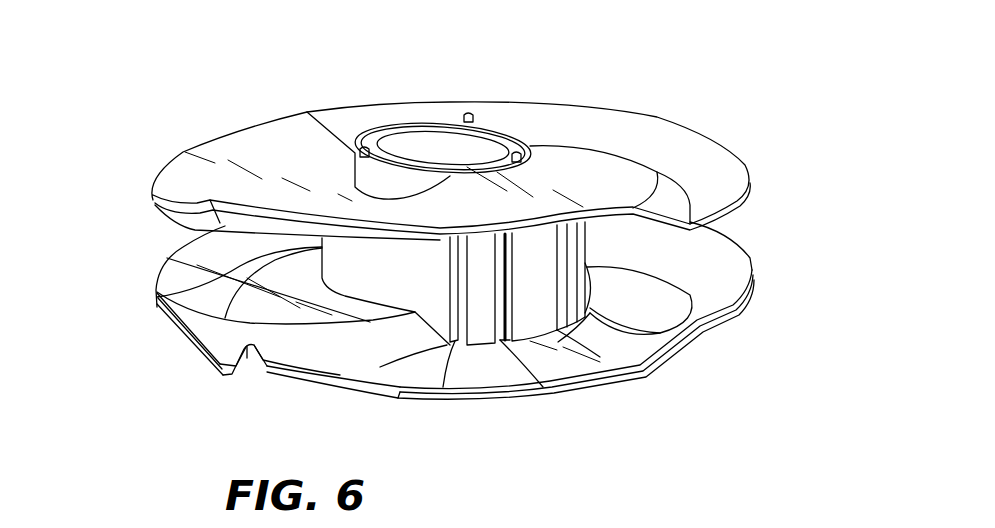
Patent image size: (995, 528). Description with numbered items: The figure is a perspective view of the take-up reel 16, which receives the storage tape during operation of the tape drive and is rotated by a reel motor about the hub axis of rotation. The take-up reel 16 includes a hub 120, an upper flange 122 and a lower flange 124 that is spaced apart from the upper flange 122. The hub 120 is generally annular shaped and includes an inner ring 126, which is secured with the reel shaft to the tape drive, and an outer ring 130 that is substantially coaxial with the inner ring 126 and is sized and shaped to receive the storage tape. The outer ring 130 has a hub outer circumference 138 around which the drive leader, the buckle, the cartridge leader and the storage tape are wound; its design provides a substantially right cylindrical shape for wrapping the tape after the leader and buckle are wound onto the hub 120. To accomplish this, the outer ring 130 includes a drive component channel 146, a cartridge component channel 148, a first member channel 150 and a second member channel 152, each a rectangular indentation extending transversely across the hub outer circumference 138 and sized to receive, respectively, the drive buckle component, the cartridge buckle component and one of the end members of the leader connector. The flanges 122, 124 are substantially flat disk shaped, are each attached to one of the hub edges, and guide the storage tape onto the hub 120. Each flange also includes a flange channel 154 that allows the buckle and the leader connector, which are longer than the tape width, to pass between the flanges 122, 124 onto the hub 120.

The take-up reel 16 is at (660, 100).
The upper flange 122 is at (720, 141).
The lower flange 124 is at (736, 270).
The inner ring 126 is at (393, 128).
The flange channel 154 is at (220, 220).
The outer ring 130 is at (343, 270).
The hub 120 is at (225, 318).
The hub outer circumference 138 is at (217, 368).
The first member channel 150 is at (446, 396).
The drive component channel 146 is at (543, 388).
The cartridge component channel 148 is at (660, 333).
The second member channel 152 is at (640, 322).